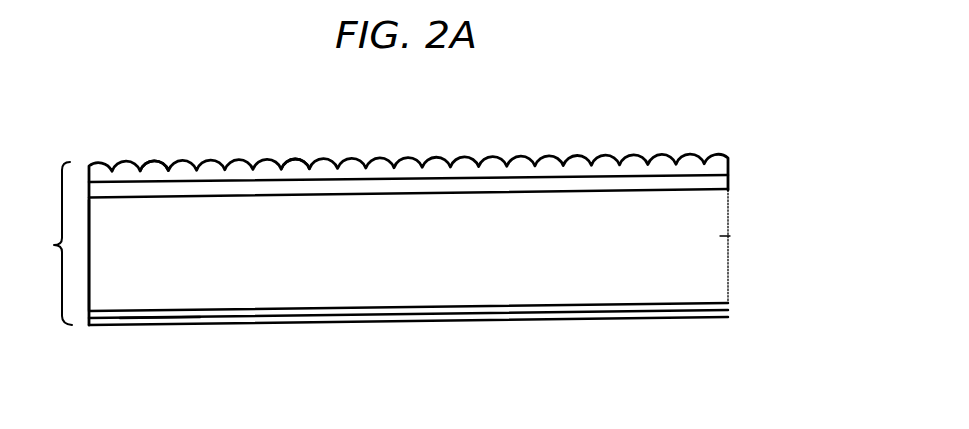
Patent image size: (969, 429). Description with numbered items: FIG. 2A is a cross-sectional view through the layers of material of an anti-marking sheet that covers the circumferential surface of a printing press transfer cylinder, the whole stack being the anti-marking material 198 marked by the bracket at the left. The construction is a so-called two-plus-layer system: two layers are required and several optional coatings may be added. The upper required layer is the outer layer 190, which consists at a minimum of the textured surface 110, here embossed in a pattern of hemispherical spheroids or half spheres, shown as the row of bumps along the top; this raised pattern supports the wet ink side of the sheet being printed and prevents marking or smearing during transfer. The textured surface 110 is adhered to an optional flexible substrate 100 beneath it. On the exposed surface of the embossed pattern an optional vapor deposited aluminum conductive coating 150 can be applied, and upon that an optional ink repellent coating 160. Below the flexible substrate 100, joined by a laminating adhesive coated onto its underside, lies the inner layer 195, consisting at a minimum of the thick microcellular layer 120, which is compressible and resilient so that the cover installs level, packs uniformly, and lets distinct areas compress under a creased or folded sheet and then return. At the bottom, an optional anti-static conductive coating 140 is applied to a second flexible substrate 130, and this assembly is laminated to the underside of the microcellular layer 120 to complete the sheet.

The flexible substrate 100 is at (729, 186).
The textured surface 110 is at (730, 164).
The microcellular layer 120 is at (730, 236).
The flexible substrate 130 is at (728, 303).
The anti-static conductive coating 140 is at (728, 317).
The vapor deposited aluminum conductive coating 150 is at (518, 158).
The ink repellent coating 160 is at (292, 155).
The outer layer 190 is at (153, 160).
The inner layer 195 is at (166, 292).
The anti-marking material 198 is at (43, 243).